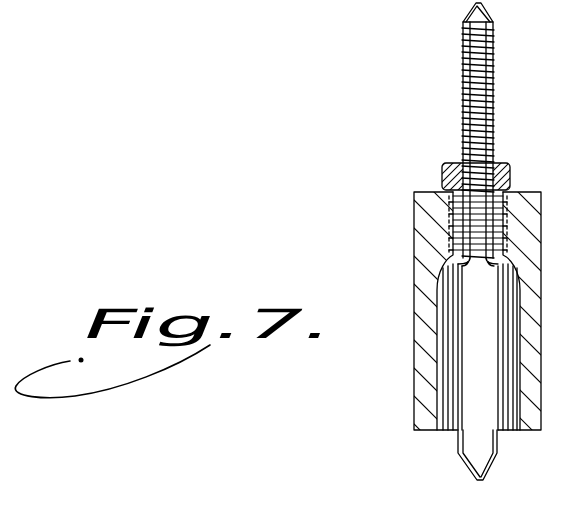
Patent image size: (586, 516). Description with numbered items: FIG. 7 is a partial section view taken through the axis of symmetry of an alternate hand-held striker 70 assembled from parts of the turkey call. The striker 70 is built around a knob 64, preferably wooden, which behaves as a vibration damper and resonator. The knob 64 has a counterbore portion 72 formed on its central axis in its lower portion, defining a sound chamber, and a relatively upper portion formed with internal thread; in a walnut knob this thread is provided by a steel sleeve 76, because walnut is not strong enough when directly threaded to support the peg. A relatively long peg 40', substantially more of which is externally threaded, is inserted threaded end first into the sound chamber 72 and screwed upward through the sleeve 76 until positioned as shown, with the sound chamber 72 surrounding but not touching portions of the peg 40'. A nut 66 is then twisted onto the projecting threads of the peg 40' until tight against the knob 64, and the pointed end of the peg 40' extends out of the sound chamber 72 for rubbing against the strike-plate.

The hand-held striker 70 is at (406, 102).
The peg 40' is at (500, 250).
The nut 66 is at (508, 170).
The knob 64 is at (534, 207).
The steel sleeve 76 is at (450, 212).
The counterbore portion 72 is at (510, 431).